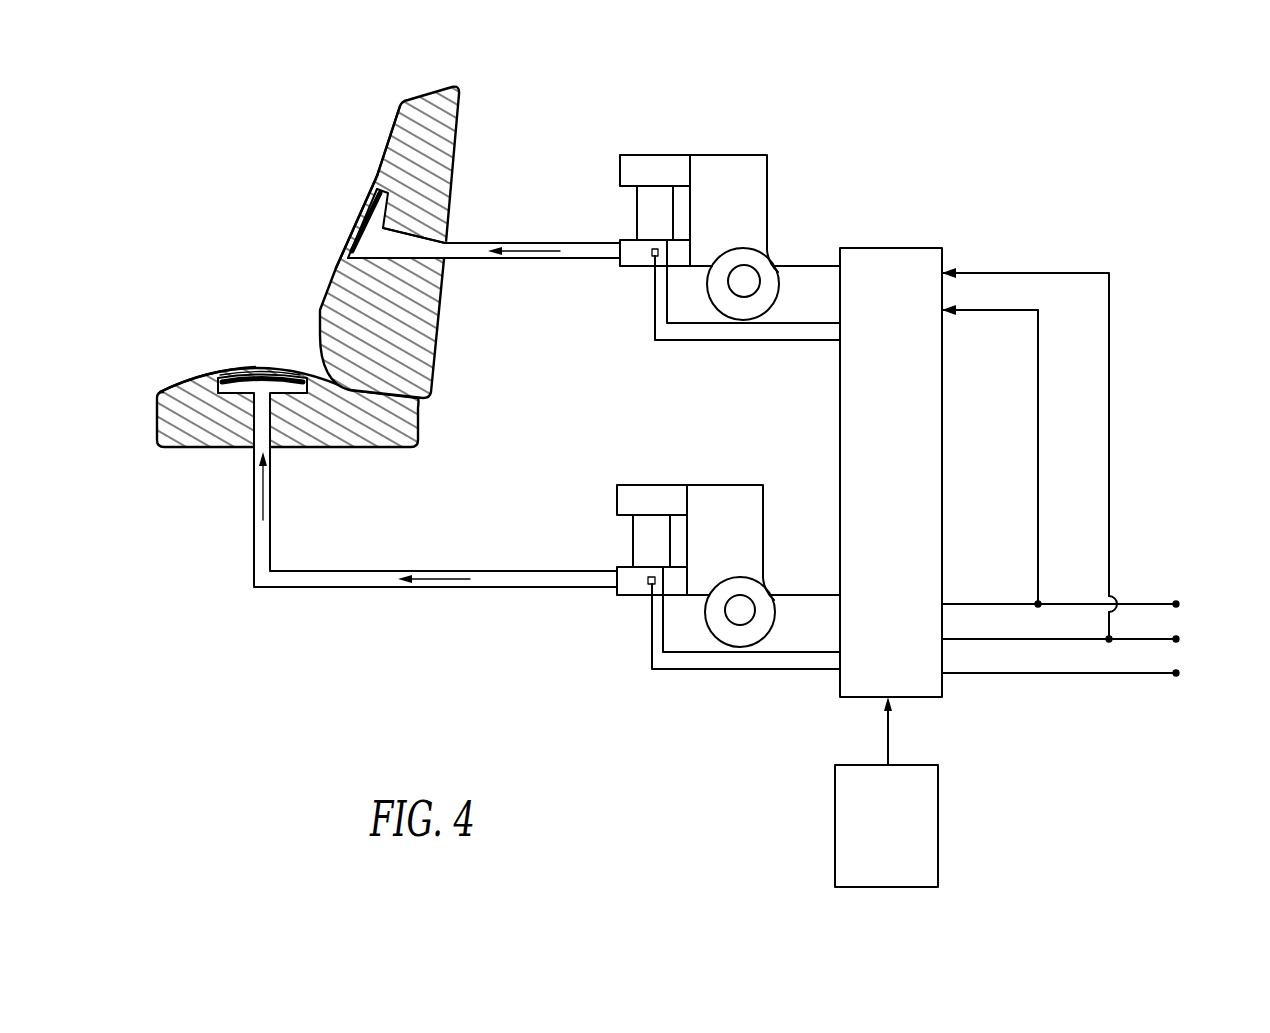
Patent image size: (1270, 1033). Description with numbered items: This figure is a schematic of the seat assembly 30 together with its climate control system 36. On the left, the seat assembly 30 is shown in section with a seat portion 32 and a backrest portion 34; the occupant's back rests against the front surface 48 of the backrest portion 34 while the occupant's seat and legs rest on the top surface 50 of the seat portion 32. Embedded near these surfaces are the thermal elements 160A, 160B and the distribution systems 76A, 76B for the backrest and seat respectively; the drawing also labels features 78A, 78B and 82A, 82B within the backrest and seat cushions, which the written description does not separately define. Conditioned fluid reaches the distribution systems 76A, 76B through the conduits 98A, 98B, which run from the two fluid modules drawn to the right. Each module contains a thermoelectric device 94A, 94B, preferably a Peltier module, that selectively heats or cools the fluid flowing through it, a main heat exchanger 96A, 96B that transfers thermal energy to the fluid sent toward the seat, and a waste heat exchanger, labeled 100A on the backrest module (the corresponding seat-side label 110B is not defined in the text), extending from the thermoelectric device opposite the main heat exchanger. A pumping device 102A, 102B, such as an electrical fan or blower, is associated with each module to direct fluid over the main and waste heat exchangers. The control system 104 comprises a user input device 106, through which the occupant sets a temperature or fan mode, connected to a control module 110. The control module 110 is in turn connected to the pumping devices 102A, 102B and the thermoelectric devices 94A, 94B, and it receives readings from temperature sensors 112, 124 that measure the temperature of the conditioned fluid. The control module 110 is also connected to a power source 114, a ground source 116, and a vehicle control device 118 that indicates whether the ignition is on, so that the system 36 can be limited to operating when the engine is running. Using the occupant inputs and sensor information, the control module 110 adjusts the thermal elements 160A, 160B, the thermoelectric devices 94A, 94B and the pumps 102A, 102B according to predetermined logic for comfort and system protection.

The seat assembly 30 is at (262, 248).
The seat portion 32 is at (209, 353).
The backrest portion 34 is at (385, 112).
The climate control system 36 is at (706, 93).
The front surface 48 is at (380, 137).
The top surface 50 is at (173, 360).
The distribution system 76A is at (338, 196).
The distribution system 76B is at (262, 335).
The seat back air passage 78A is at (448, 187).
The seat cushion air passage 78B is at (218, 444).
The seat back air cavity 82A is at (368, 203).
The seat cushion air cavity 82B is at (267, 387).
The thermoelectric device 94A is at (637, 217).
The thermoelectric device 94B is at (633, 535).
The main heat exchanger 96A is at (627, 265).
The main heat exchanger 96B is at (617, 593).
The conduit 98A is at (523, 262).
The conduit 98B is at (425, 568).
The waste heat exchanger 100A is at (655, 155).
The pumping device 102A is at (768, 250).
The pumping device 102B is at (767, 580).
The control system 104 is at (884, 195).
The user input device 106 is at (905, 838).
The control module 110 is at (910, 248).
The second valve inlet 110B is at (650, 485).
The temperature sensor 112 is at (651, 584).
The power source 114 is at (1180, 600).
The ground source 116 is at (1180, 636).
The vehicle control device 118 is at (1180, 673).
The temperature sensor 124 is at (652, 257).
The thermal element 160A is at (348, 240).
The thermal element 160B is at (242, 368).